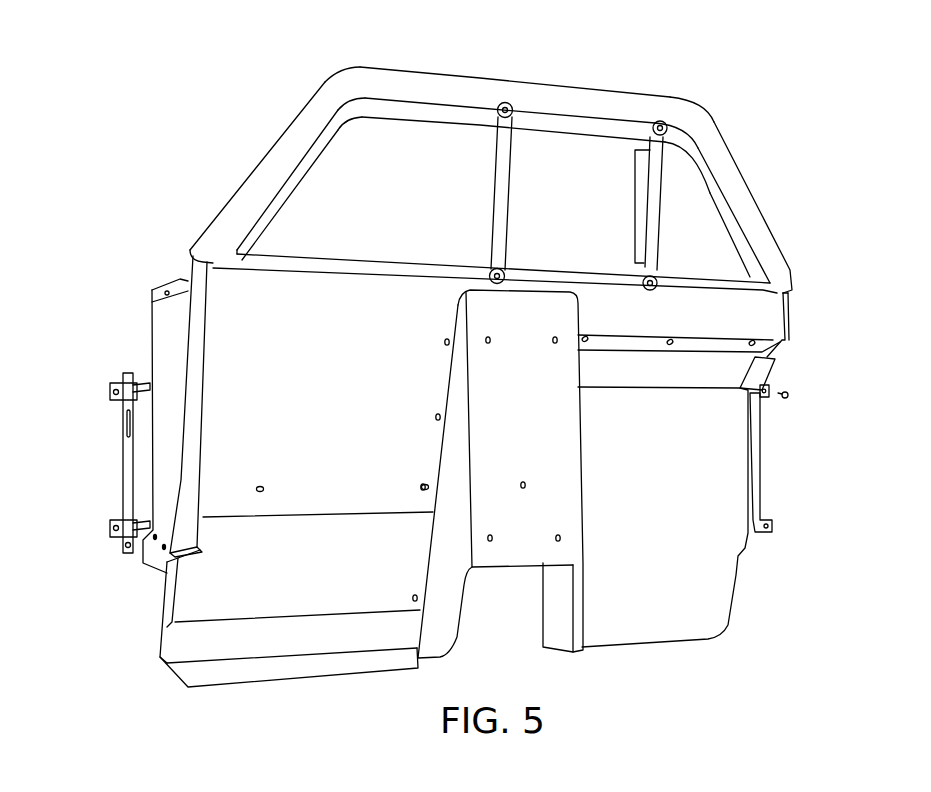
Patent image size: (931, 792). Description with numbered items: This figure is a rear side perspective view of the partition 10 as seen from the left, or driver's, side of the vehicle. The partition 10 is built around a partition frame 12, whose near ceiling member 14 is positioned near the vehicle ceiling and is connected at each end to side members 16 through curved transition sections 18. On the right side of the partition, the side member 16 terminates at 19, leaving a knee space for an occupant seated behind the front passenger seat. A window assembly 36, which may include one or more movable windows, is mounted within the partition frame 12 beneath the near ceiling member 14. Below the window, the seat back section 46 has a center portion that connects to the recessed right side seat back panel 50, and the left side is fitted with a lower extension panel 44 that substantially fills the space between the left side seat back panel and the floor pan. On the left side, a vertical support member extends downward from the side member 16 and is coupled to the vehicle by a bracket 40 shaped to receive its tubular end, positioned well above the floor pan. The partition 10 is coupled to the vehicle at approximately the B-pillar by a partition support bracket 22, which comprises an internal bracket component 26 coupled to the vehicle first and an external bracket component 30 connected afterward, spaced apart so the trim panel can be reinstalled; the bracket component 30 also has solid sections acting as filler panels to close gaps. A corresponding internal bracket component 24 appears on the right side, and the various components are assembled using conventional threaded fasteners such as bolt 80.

The partition 10 is at (740, 97).
The partition frame 12 is at (590, 79).
The near ceiling member 14 is at (552, 87).
The side members 16 is at (273, 152).
The transition sections 18 is at (340, 82).
The side member termination 19 is at (788, 338).
The partition support bracket 22 is at (92, 300).
The bracket component 24 is at (760, 470).
The bracket component 26 is at (127, 372).
The bracket component 30 is at (147, 325).
The window assembly 36 is at (376, 248).
The bracket 40 is at (167, 573).
The lower extension panel 44 is at (335, 672).
The seat back section 46 is at (507, 562).
The recessed right side seat back panel 50 is at (733, 590).
The bolt 80 is at (790, 397).